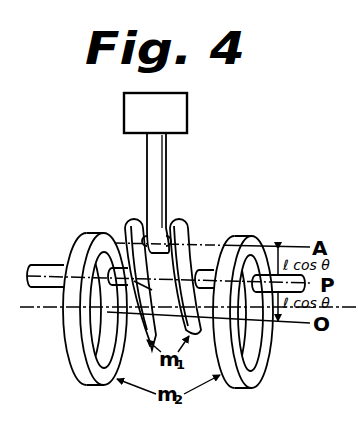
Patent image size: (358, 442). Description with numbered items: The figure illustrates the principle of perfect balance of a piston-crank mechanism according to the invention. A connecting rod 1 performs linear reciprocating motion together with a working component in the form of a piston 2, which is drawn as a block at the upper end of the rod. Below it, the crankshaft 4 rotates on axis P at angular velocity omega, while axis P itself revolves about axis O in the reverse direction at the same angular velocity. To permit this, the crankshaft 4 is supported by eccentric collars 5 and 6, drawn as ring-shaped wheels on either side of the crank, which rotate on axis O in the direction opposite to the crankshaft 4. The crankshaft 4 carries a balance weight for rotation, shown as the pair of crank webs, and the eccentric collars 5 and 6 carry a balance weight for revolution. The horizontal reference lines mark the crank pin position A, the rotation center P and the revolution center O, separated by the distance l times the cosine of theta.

The connecting rod 1 is at (167, 177).
The piston 2 is at (189, 113).
The crankshaft 4 is at (270, 275).
The eccentric collar 5 is at (238, 237).
The eccentric collar 6 is at (90, 234).